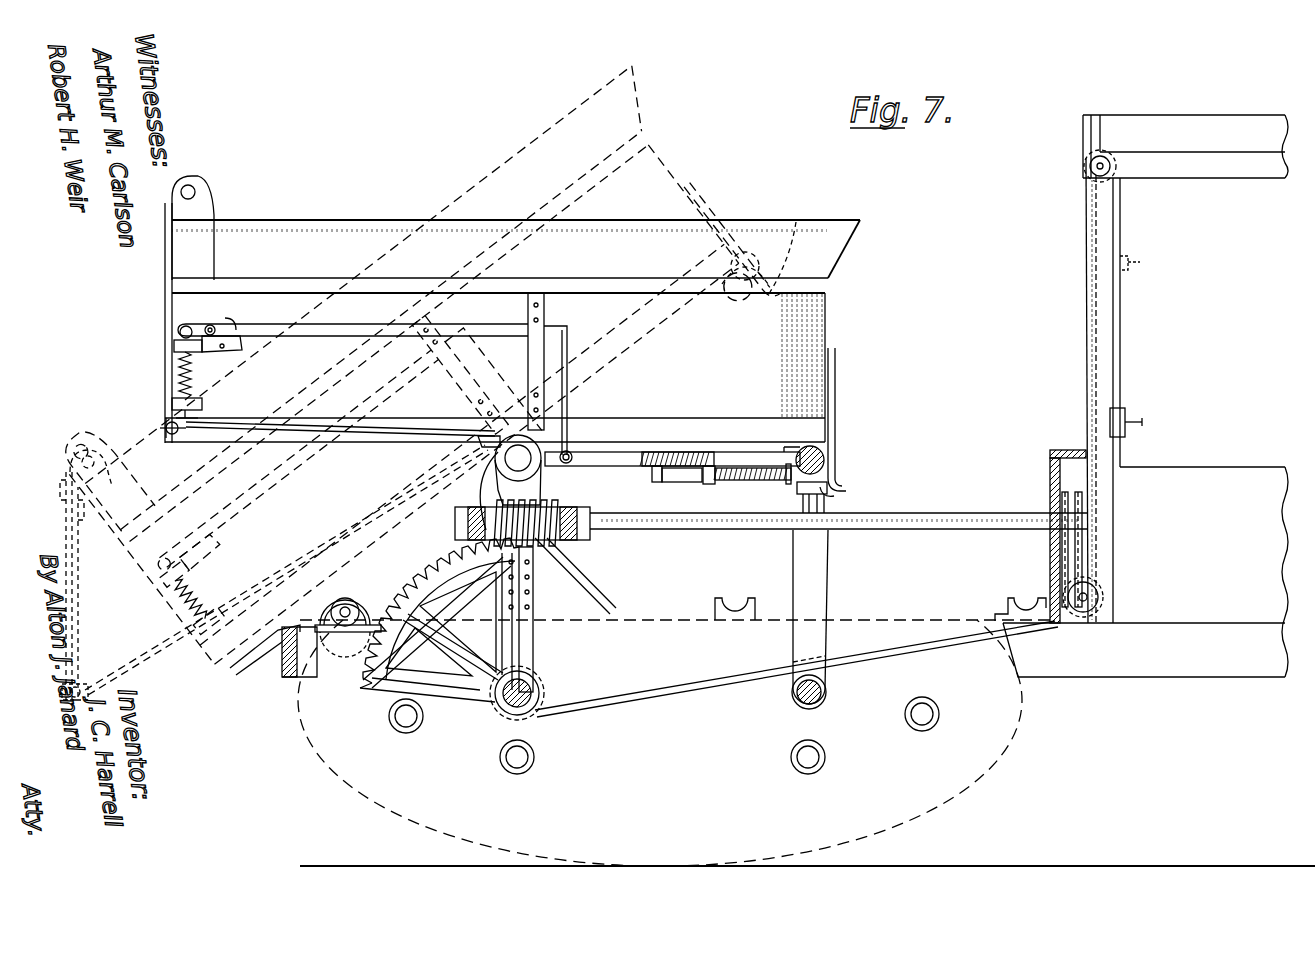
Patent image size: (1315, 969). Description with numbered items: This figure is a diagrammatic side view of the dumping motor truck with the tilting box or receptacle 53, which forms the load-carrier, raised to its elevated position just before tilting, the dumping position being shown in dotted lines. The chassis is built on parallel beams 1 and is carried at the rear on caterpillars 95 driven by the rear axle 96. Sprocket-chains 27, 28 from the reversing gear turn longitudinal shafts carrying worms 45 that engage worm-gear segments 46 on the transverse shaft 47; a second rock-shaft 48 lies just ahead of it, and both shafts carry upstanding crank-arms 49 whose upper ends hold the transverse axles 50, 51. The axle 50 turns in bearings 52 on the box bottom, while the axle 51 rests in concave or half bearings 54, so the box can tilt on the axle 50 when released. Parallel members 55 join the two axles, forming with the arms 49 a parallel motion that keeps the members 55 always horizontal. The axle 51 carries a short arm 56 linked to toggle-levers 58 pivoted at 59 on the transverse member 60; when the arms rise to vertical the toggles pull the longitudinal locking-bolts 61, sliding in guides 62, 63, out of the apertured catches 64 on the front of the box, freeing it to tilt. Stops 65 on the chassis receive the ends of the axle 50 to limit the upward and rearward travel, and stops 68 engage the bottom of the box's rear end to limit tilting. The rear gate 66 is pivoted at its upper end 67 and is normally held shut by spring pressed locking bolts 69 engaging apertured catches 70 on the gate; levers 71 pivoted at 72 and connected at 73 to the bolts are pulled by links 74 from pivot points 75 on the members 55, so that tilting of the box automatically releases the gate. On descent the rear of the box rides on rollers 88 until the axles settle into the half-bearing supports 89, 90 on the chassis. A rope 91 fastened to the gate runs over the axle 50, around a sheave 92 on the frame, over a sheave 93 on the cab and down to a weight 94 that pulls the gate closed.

The parallel beams 1 is at (1130, 662).
The sprocket-chain 27 is at (1062, 557).
The sprocket-chain 28 is at (1082, 557).
The worm 45 is at (542, 511).
The worm-gear segment 46 is at (445, 566).
The transverse shaft 47 is at (540, 697).
The rock-shaft 48 is at (792, 702).
The crank-arms 49 is at (836, 503).
The axle 50 is at (545, 450).
The axle 51 is at (825, 460).
The bearings 52 is at (488, 440).
The box or receptacle 53 is at (820, 326).
The concave or half bearings 54 is at (735, 284).
The parallel members 55 is at (622, 455).
The short centrally located arm 56 is at (842, 492).
The toggle-levers 58 is at (692, 480).
The pivot 59 is at (672, 452).
The transverse member 60 is at (656, 468).
The locking-bolts 61 is at (776, 480).
The guide 62 is at (712, 484).
The guide 63 is at (802, 488).
The apertured catches 64 is at (836, 488).
The stops 65 is at (486, 476).
The rear gate 66 is at (176, 347).
The upper end pivot of gate 67 is at (198, 192).
The stops 68 is at (272, 668).
The spring pressed locking bolts 69 is at (180, 375).
The apertured catches 70 is at (174, 410).
The longitudinally disposed levers 71 is at (274, 330).
The pivot 72 is at (235, 322).
The pivotal connection 73 is at (180, 333).
The links 74 is at (568, 345).
The pivot points 75 is at (578, 456).
The rollers 88 is at (362, 605).
The support 89 is at (721, 598).
The support 90 is at (1020, 604).
The operating cord or rope 91 is at (315, 432).
The sheave 92 is at (1078, 612).
The sheave 93 is at (1082, 168).
The weight 94 is at (1126, 420).
The caterpillars 95 is at (1020, 760).
The rear axle 96 is at (405, 730).